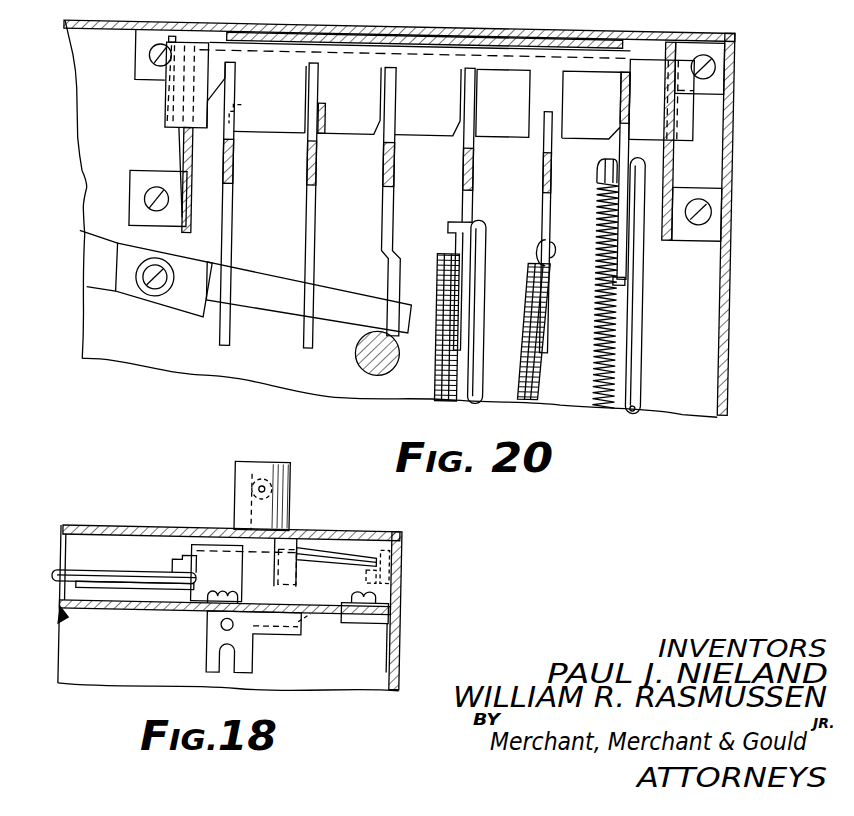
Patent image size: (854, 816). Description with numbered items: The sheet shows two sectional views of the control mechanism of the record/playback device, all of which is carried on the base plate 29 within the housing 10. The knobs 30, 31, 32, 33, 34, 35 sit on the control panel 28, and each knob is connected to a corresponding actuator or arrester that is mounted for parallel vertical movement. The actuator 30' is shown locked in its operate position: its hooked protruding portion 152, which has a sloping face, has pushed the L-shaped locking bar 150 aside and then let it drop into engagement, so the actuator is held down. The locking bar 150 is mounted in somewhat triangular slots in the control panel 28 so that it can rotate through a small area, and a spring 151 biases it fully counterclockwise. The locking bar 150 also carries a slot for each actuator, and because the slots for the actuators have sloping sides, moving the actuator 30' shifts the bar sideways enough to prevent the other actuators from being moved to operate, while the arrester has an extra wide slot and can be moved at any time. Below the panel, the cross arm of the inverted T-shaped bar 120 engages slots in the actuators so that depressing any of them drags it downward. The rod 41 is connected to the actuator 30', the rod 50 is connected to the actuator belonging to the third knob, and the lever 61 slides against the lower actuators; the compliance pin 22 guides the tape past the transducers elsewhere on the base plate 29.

In FIG. 20, the housing 10 is at (736, 313).
In FIG. 18, the housing 10 is at (404, 613).
In FIG. 20, the base plate 29 is at (712, 352).
In FIG. 18, the base plate 29 is at (59, 620).
In FIG. 20, the control panel 28 is at (672, 228).
In FIG. 18, the control panel 28 is at (288, 543).
In FIG. 18, the knob 30 is at (262, 476).
In FIG. 20, the actuator 30' is at (651, 189).
In FIG. 18, the actuator 30' is at (236, 541).
In FIG. 20, the rod 41 is at (643, 342).
In FIG. 18, the rod 41 is at (56, 572).
In FIG. 20, the rod 50 is at (489, 361).
In FIG. 20, the compliance pin 22 is at (362, 355).
In FIG. 20, the lever 61 is at (96, 241).
In FIG. 20, the locking bar 150 is at (596, 57).
In FIG. 18, the locking bar 150 is at (348, 559).
In FIG. 20, the spring 151 is at (172, 129).
In FIG. 20, the protruding portion 152 is at (292, 106).
In FIG. 18, the protruding portion 152 is at (314, 610).
In FIG. 18, the inverted T-shaped bar 120 is at (289, 629).
In FIG. 20, the knob 31 is at (555, 203).
In FIG. 20, the knob 32 is at (478, 201).
In FIG. 20, the knob 33 is at (398, 206).
In FIG. 20, the knob 34 is at (320, 214).
In FIG. 20, the knob 35 is at (238, 216).